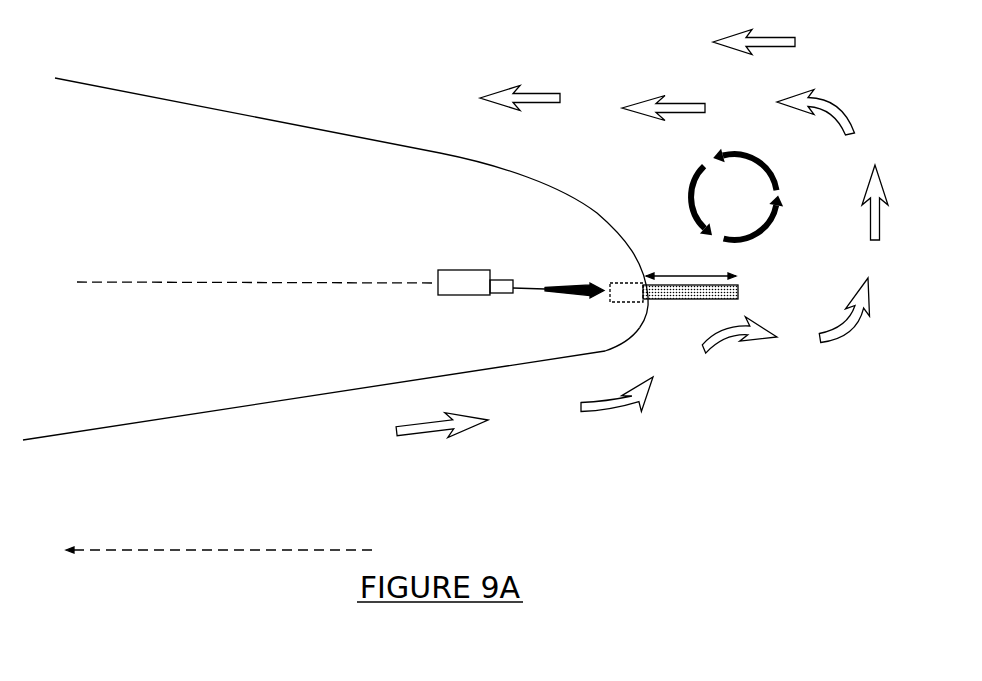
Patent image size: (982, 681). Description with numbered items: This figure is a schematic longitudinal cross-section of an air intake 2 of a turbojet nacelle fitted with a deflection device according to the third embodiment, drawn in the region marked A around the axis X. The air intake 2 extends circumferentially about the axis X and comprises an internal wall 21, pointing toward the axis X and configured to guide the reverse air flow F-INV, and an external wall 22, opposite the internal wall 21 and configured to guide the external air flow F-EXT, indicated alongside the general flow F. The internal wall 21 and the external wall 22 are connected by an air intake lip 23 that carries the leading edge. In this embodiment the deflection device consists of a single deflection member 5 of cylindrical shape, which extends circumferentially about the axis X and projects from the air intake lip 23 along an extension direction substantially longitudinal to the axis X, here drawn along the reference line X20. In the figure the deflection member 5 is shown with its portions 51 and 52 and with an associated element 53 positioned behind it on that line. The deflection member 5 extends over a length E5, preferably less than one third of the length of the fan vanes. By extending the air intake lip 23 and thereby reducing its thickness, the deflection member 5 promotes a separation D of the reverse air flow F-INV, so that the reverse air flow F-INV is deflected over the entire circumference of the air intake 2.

The aircraft A is at (173, 55).
The air intake 2 is at (355, 259).
The internal wall 21 is at (360, 389).
The external wall 22 is at (435, 152).
The air intake lip 23 is at (648, 303).
The deflection member 5 is at (712, 318).
The rod end sleeve 51 is at (626, 303).
The rod body 52 is at (677, 299).
The actuator 53 is at (462, 270).
The axis of nose X20 is at (239, 282).
The axis X is at (213, 551).
The length of the deflection member E5 is at (691, 269).
The separation of the reverse air flow D is at (779, 188).
The flow direction F is at (754, 31).
The external air flow F-EXT is at (520, 86).
The reverse air flow F-INV is at (646, 271).